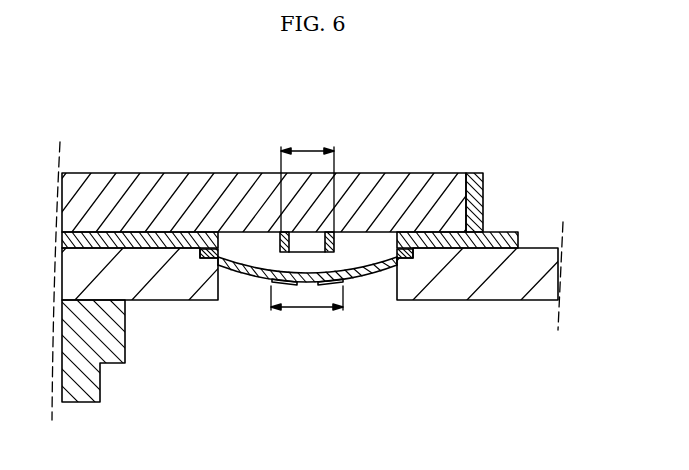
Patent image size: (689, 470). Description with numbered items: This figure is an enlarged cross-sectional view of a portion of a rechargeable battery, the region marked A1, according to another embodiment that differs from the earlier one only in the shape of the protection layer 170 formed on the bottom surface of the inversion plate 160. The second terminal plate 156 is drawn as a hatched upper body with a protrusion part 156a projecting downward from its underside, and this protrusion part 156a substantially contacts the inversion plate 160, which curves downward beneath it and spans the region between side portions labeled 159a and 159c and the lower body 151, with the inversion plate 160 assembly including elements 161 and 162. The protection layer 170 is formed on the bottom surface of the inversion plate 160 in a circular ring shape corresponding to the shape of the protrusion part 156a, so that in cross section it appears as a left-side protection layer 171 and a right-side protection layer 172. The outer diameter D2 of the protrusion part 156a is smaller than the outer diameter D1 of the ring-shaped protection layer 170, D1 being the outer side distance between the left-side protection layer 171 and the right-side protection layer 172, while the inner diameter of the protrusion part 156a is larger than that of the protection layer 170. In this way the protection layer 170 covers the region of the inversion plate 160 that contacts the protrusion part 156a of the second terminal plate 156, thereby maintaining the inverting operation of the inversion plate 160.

The substrate 151 is at (489, 292).
The second terminal plate 156 is at (242, 182).
The protrusion part 156a is at (320, 243).
The side wall portion 159a is at (476, 172).
The lower wall portion 159c is at (118, 342).
The inversion plate 160 is at (314, 316).
The diaphragm / membrane 161 is at (357, 271).
The diaphragm anchor 162 is at (404, 259).
The protection layer 170 is at (275, 337).
The left-side protection layer 171 is at (263, 282).
The right-side protection layer 172 is at (308, 282).
The region A1 is at (436, 126).
The outer diameter of the protection layer D1 is at (307, 310).
The outer diameter of the protrusion part D2 is at (307, 177).